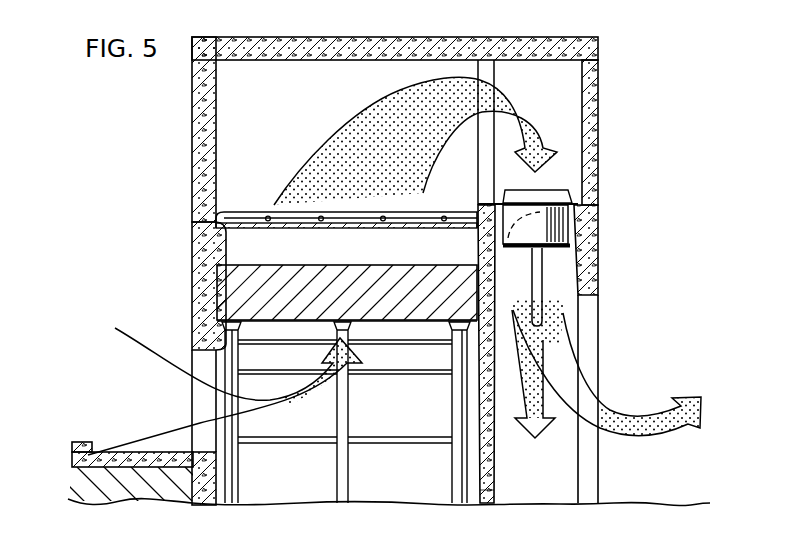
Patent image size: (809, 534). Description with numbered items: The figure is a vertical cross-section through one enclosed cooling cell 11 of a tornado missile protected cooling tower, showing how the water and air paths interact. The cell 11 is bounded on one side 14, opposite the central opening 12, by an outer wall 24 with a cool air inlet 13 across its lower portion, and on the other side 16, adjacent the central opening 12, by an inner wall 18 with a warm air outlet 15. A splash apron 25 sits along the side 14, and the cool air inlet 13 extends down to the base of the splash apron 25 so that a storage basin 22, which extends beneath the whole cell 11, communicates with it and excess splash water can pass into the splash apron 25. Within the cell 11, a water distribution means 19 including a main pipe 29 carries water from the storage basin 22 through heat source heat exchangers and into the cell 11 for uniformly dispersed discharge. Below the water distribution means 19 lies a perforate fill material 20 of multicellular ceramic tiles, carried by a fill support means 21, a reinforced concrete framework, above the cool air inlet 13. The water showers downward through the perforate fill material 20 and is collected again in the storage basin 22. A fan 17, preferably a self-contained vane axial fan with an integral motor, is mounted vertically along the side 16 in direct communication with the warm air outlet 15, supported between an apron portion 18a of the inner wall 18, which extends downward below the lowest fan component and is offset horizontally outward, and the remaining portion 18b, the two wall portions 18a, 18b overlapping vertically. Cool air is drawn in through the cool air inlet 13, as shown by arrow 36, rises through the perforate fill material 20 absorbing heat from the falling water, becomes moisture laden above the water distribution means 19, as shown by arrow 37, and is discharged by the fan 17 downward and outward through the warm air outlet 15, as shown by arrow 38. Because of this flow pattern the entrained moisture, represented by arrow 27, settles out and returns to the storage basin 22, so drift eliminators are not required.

The enclosed cooling cell 11 is at (403, 35).
The central opening 12 is at (645, 503).
The cool air inlet 13 is at (200, 402).
The side opposite the central opening 14 is at (192, 183).
The warm air outlet 15 is at (568, 377).
The side adjacent the central opening 16 is at (600, 155).
The fan 17 is at (557, 188).
The inner wall 18 is at (495, 467).
The apron portion 18a is at (598, 250).
The remaining portion of the inner wall 18b is at (494, 493).
The water distribution means 19 is at (440, 211).
The perforate fill material 20 is at (396, 321).
The fill support means 21 is at (337, 453).
The storage basin 22 is at (378, 518).
The outer wall 24 is at (192, 118).
The splash apron 25 is at (113, 450).
The arrow representing moisture return 27 is at (522, 393).
The main pipe 29 is at (546, 302).
The arrow representing cool air flow 36 is at (167, 365).
The arrow representing moisture-laden air flow 37 is at (367, 108).
The arrow representing discharged air flow 38 is at (623, 417).